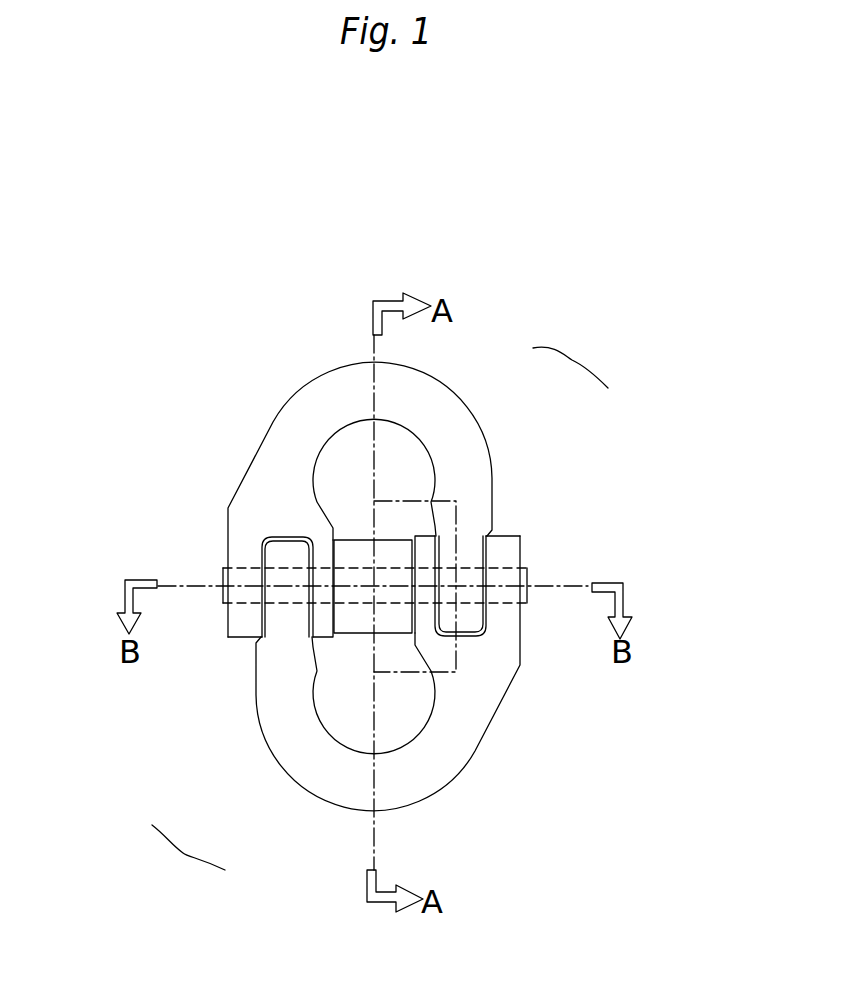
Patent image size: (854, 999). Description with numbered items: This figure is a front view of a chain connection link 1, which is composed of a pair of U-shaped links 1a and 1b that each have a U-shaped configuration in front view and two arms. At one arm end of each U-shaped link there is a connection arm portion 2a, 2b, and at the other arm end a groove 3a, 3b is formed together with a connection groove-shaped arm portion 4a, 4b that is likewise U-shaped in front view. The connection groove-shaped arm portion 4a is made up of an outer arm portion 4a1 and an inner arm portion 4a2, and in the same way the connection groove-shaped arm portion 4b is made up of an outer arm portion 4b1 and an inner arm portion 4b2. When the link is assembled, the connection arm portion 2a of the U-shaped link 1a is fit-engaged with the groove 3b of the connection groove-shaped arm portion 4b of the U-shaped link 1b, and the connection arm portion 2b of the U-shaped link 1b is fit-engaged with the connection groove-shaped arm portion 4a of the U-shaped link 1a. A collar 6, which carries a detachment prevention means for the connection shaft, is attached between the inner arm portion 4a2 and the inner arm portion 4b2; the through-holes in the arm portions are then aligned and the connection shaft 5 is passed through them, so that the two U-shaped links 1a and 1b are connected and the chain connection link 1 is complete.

The chain connection link 1 is at (533, 576).
The U-shaped link 1a is at (440, 378).
The U-shaped link 1b is at (436, 793).
The connection arm portion 2a is at (465, 633).
The connection arm portion 2b is at (270, 556).
The groove 3a is at (272, 537).
The groove 3b is at (476, 616).
The connection groove-shaped arm portion 4a is at (188, 855).
The outer arm portion 4a1 is at (237, 627).
The inner arm portion 4a2 is at (312, 640).
The connection groove-shaped arm portion 4b is at (570, 360).
The outer arm portion 4b1 is at (510, 548).
The inner arm portion 4b2 is at (432, 545).
The connection shaft 5 is at (226, 590).
The collar 6 is at (357, 633).